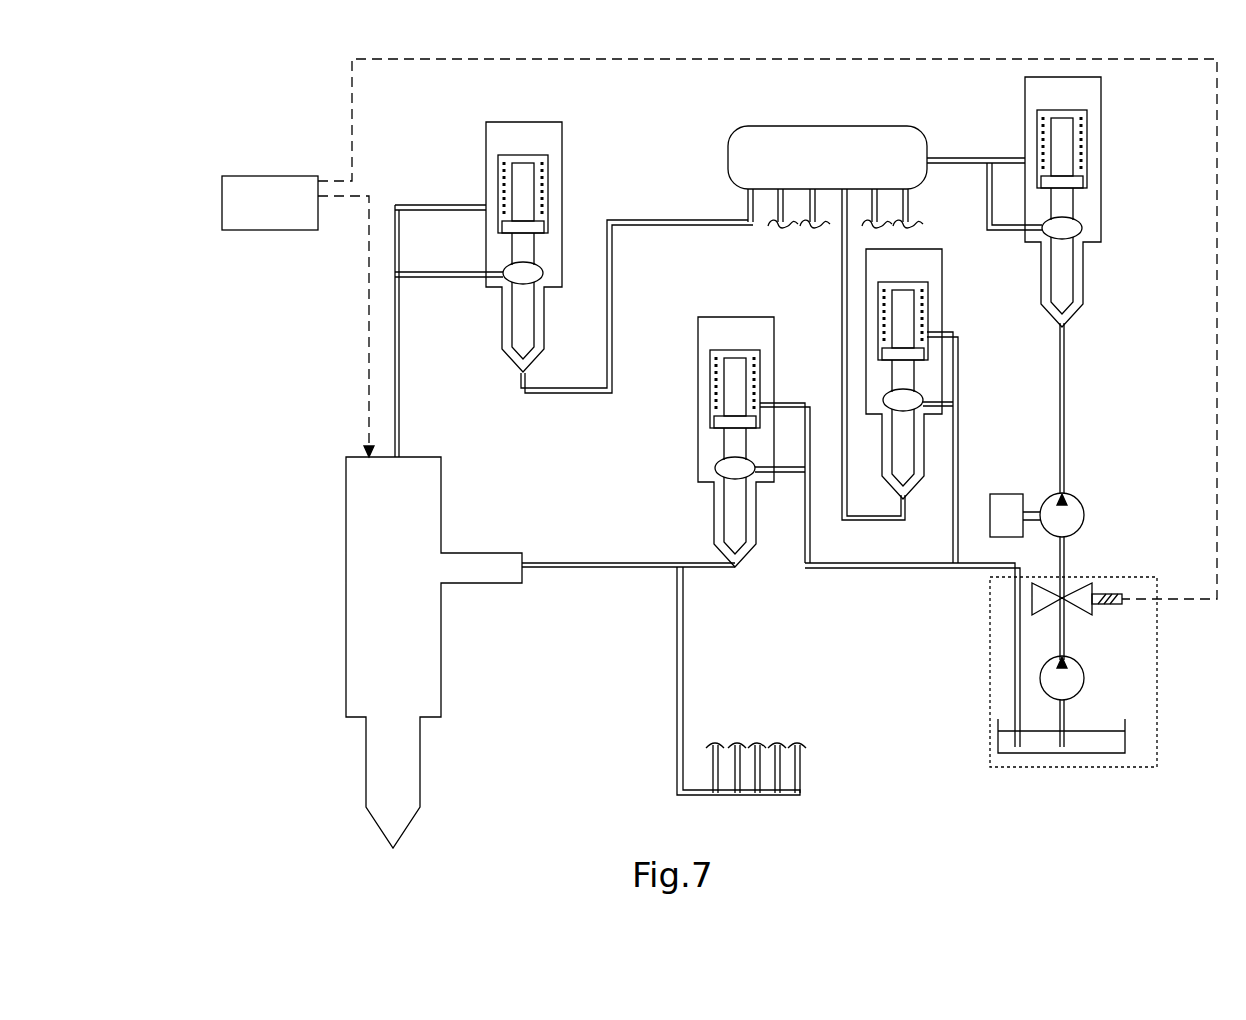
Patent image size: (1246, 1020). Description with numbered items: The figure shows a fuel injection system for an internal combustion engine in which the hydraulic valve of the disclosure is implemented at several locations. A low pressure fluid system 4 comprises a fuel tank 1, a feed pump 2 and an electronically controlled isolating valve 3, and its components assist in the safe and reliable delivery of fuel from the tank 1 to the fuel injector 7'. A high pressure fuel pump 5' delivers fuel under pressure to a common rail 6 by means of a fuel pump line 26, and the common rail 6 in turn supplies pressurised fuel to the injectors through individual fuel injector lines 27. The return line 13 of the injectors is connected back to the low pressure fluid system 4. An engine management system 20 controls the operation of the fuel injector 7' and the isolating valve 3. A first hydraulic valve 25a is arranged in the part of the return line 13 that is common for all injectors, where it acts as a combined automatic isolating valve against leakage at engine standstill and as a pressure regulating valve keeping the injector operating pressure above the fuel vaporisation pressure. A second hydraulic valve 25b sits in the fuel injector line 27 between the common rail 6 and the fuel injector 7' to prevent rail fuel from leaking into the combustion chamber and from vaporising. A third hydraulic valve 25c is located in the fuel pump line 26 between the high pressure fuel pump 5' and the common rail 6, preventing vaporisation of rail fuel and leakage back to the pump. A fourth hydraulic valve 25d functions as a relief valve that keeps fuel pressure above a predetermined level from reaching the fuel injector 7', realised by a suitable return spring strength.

The fuel tank 1 is at (1083, 745).
The feed pump 2 is at (1084, 678).
The electronically controlled isolating valve 3 is at (1083, 597).
The low pressure fluid system 4 is at (1145, 767).
The high pressure fuel pump 5' is at (1072, 576).
The common rail 6 is at (928, 136).
The fuel injector 7' is at (373, 526).
The return line 13 is at (678, 612).
The engine management system 20 is at (240, 172).
The first hydraulic valve 25a is at (775, 320).
The second hydraulic valve 25b is at (562, 165).
The third hydraulic valve 25c is at (1100, 122).
The fourth hydraulic valve 25d is at (942, 280).
The fuel pump line 26 is at (1066, 417).
The fuel injector line 27 is at (680, 220).